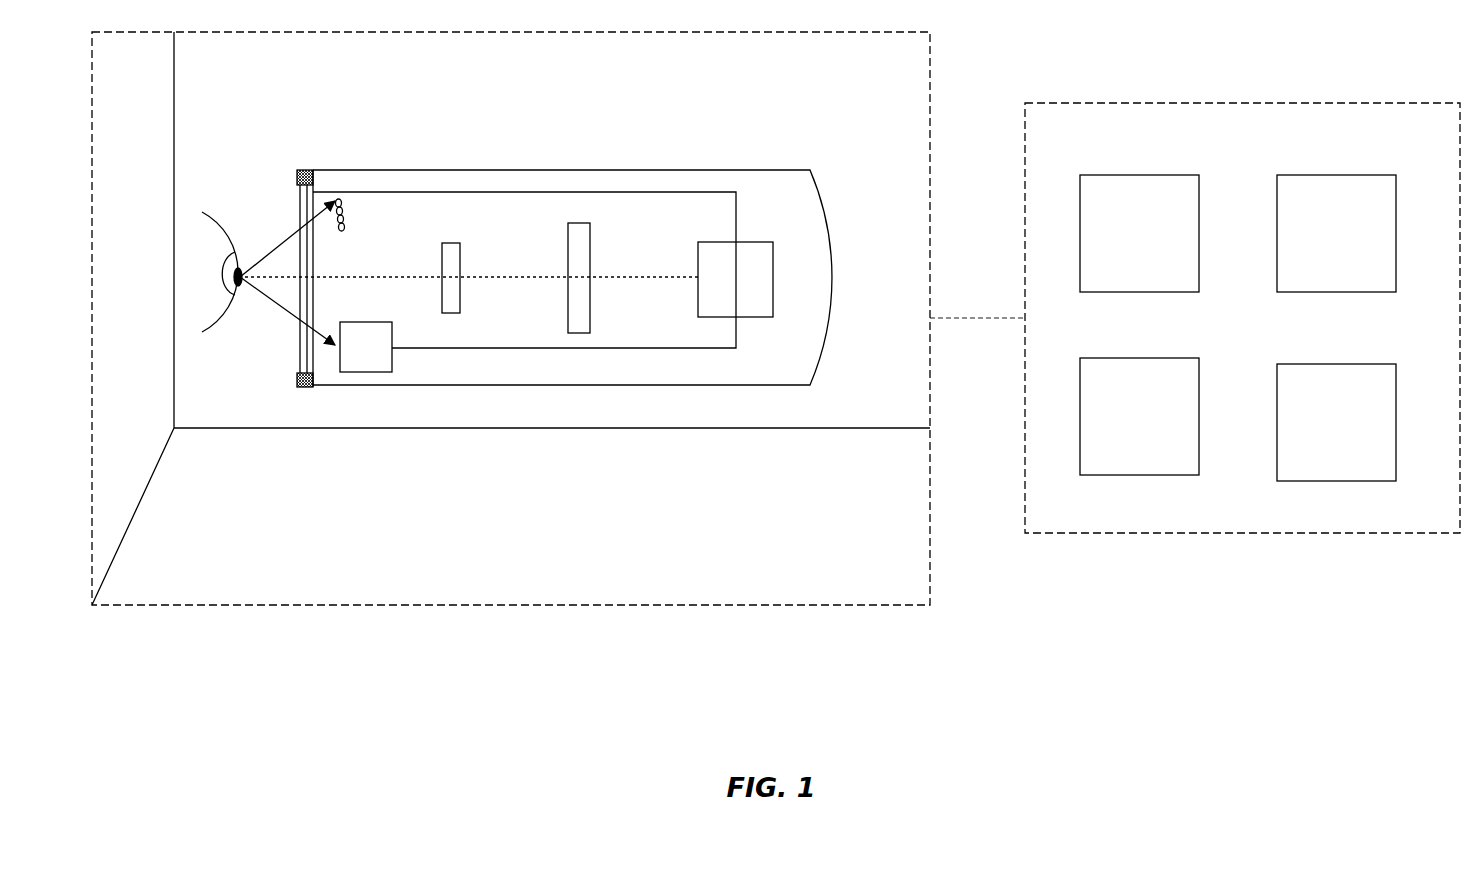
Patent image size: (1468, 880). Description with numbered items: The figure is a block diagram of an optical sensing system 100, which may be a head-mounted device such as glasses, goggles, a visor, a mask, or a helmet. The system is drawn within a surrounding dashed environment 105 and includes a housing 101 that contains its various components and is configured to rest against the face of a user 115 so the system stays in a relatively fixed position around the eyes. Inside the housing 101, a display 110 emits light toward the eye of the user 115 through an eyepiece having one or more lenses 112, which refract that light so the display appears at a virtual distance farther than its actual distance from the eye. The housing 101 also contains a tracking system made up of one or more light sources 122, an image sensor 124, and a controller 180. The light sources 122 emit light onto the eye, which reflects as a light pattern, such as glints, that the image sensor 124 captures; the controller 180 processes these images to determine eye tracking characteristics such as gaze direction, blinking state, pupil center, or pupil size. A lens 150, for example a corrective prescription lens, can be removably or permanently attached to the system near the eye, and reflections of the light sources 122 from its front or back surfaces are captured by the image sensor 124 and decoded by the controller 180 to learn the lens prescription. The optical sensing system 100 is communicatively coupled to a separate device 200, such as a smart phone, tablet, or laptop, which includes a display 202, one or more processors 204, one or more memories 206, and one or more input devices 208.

The optical sensing system 100 is at (400, 134).
The housing 101 is at (700, 386).
The environment 105 is at (119, 224).
The display 110 is at (590, 262).
The lenses 112 is at (460, 268).
The user 115 is at (230, 229).
The light sources 122 is at (338, 199).
The image sensor 124 is at (353, 356).
The lens 150 is at (295, 356).
The controller 180 is at (722, 281).
The device 200 is at (1051, 141).
The display 202 is at (1126, 242).
The processors 204 is at (1323, 242).
The memories 206 is at (1126, 425).
The input devices 208 is at (1323, 431).